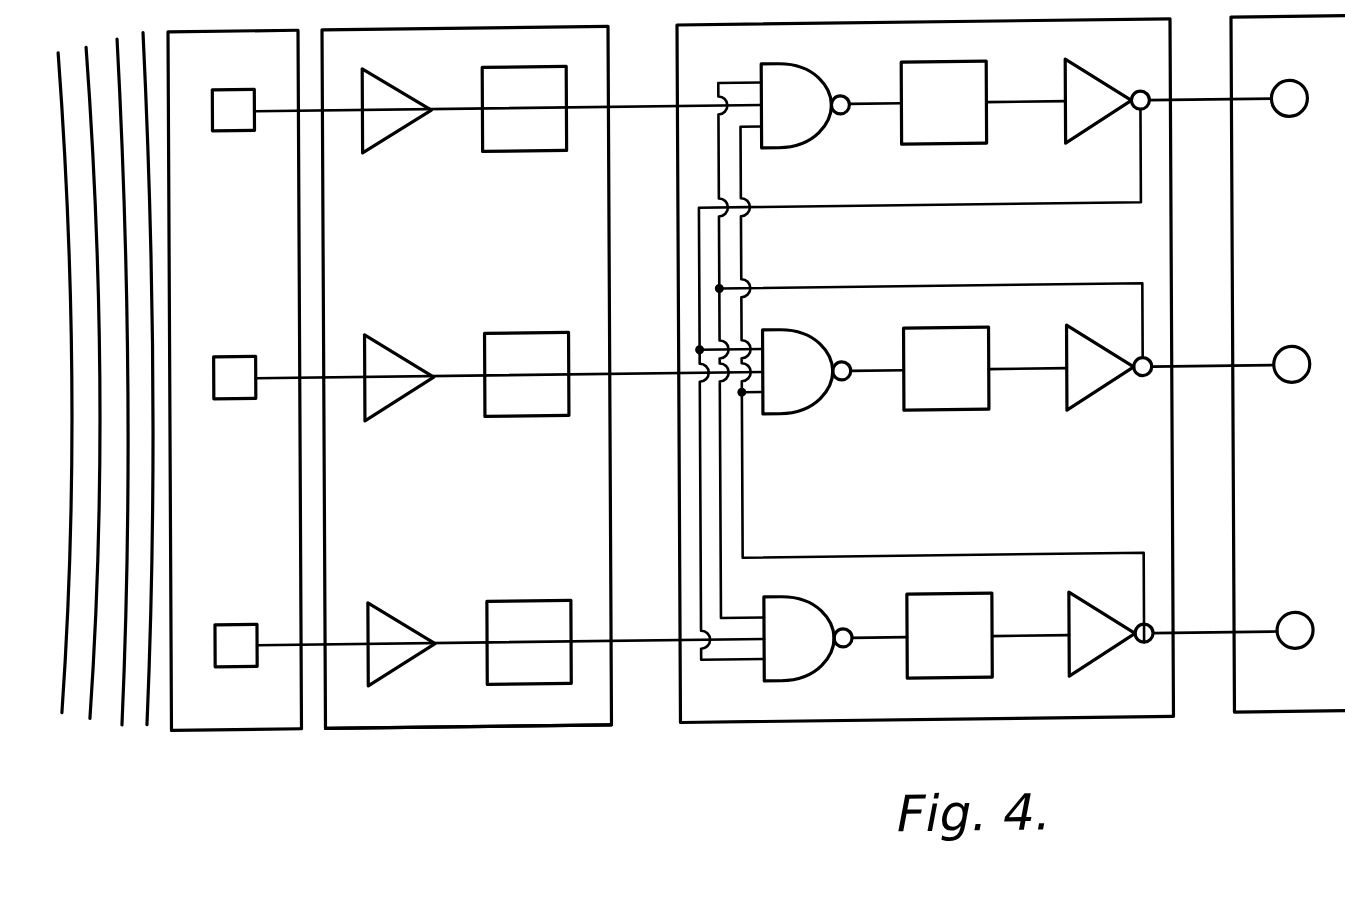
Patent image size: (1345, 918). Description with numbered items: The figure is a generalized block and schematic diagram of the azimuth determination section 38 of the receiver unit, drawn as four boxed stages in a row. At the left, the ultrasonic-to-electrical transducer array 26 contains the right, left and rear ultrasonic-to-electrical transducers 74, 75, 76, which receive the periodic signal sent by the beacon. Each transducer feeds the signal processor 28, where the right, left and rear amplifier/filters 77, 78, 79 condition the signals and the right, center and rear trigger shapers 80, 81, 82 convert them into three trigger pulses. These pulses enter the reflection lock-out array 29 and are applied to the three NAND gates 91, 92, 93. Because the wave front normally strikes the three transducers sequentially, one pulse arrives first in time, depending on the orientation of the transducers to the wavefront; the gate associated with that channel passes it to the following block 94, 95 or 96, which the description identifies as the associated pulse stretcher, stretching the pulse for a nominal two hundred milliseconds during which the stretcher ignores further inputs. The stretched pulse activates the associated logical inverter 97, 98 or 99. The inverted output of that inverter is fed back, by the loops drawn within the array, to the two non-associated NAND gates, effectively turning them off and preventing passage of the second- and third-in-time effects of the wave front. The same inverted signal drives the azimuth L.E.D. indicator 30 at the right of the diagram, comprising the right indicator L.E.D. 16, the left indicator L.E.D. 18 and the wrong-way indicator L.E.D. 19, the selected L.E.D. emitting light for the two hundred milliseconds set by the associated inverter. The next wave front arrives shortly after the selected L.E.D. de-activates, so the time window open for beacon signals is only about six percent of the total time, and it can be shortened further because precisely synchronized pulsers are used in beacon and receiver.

The "right" indicator L.E.D. 16 is at (1281, 126).
The "left" indicator L.E.D. 18 is at (1283, 382).
The "wrong way" indicator L.E.D. 19 is at (1292, 618).
The ultrasonic-to-electrical transducer array 26 is at (194, 719).
The signal processor 28 is at (462, 725).
The reflection lock-out array 29 is at (728, 719).
The azimuth L.E.D. indicator 30 is at (1286, 728).
The azimuth determination section 38 is at (406, 732).
The right ultrasonic-to-electrical transducer 74 is at (226, 122).
The left ultrasonic-to-electrical transducer 75 is at (231, 386).
The rear ultrasonic-to-electrical transducer 76 is at (229, 622).
The right amplifier/filter 77 is at (381, 131).
The left amplifier/filter 78 is at (378, 396).
The rear amplifier/filter 79 is at (395, 624).
The right trigger shaper 80 is at (521, 141).
The center trigger shaper 81 is at (513, 406).
The rear trigger shaper 82 is at (552, 580).
The NAND gate 91 is at (787, 136).
The NAND gate 92 is at (786, 398).
The NAND gate 93 is at (790, 666).
The delay circuit 94 is at (936, 140).
The delay circuit 95 is at (936, 400).
The delay circuit 96 is at (934, 666).
The logical inverter 97 is at (1081, 133).
The logical inverter 98 is at (1081, 392).
The logical inverter 99 is at (1085, 657).